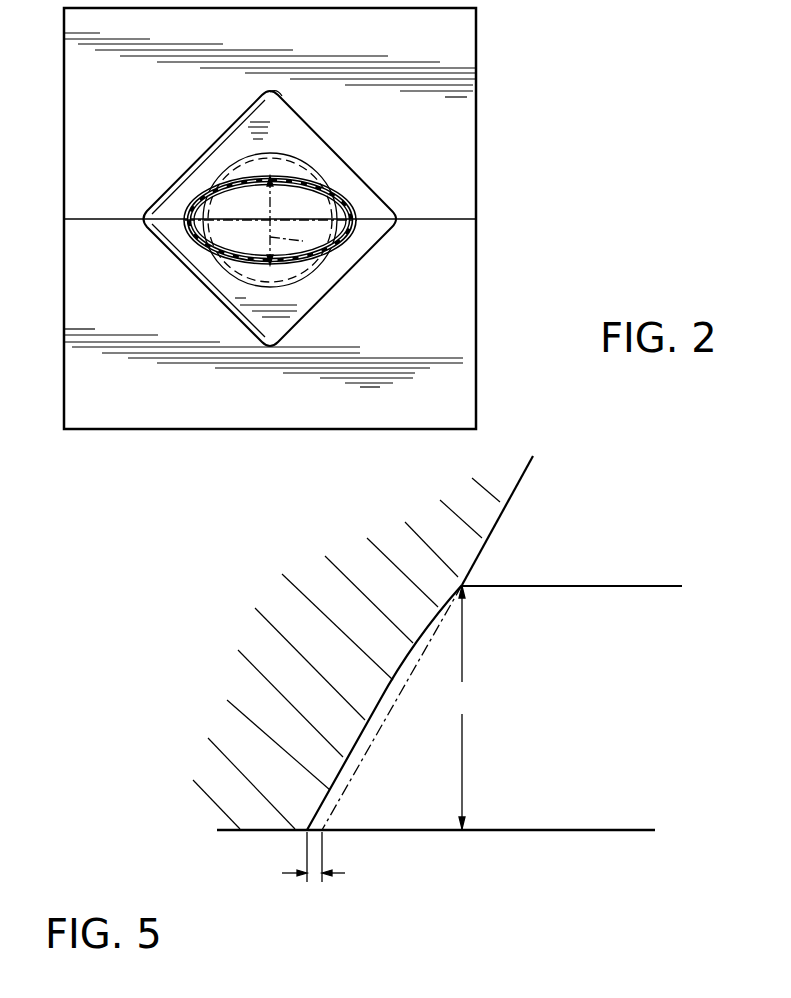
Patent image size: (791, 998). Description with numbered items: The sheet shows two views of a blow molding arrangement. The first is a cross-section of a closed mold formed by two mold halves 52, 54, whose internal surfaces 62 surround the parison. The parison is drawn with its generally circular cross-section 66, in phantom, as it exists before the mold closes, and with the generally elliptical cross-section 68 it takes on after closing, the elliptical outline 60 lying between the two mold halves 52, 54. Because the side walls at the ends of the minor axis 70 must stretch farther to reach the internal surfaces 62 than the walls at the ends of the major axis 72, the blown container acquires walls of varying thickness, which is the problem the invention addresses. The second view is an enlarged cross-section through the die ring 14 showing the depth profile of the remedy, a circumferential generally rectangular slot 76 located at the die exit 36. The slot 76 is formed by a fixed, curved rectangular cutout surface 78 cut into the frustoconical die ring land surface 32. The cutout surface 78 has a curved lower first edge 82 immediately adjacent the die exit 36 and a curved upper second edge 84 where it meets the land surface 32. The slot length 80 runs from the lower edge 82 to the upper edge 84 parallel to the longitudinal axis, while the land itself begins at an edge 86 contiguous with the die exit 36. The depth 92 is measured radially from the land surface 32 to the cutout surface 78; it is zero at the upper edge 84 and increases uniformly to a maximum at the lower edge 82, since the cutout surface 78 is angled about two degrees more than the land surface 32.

In FIG. 2, the mold half 52 is at (478, 104).
In FIG. 2, the mold half 54 is at (480, 293).
In FIG. 2, the elliptical orifice 60 is at (186, 242).
In FIG. 2, the internal surfaces 62 is at (342, 155).
In FIG. 2, the circular cross-section 66 is at (235, 273).
In FIG. 2, the elliptical cross-section 68 is at (343, 195).
In FIG. 2, the minor axis 70 is at (325, 252).
In FIG. 2, the major axis 72 is at (258, 218).
In FIG. 5, the die ring 14 is at (224, 846).
In FIG. 5, the die ring land surface 32 is at (493, 529).
In FIG. 5, the die exit 36 is at (304, 833).
In FIG. 5, the rectangular slot 76 is at (374, 696).
In FIG. 5, the rectangular cutout surface 78 is at (333, 769).
In FIG. 5, the length 80 is at (461, 707).
In FIG. 5, the lower first edge 82 is at (305, 828).
In FIG. 5, the upper second edge 84 is at (458, 584).
In FIG. 5, the edge 86 is at (528, 832).
In FIG. 5, the depth 92 is at (337, 860).